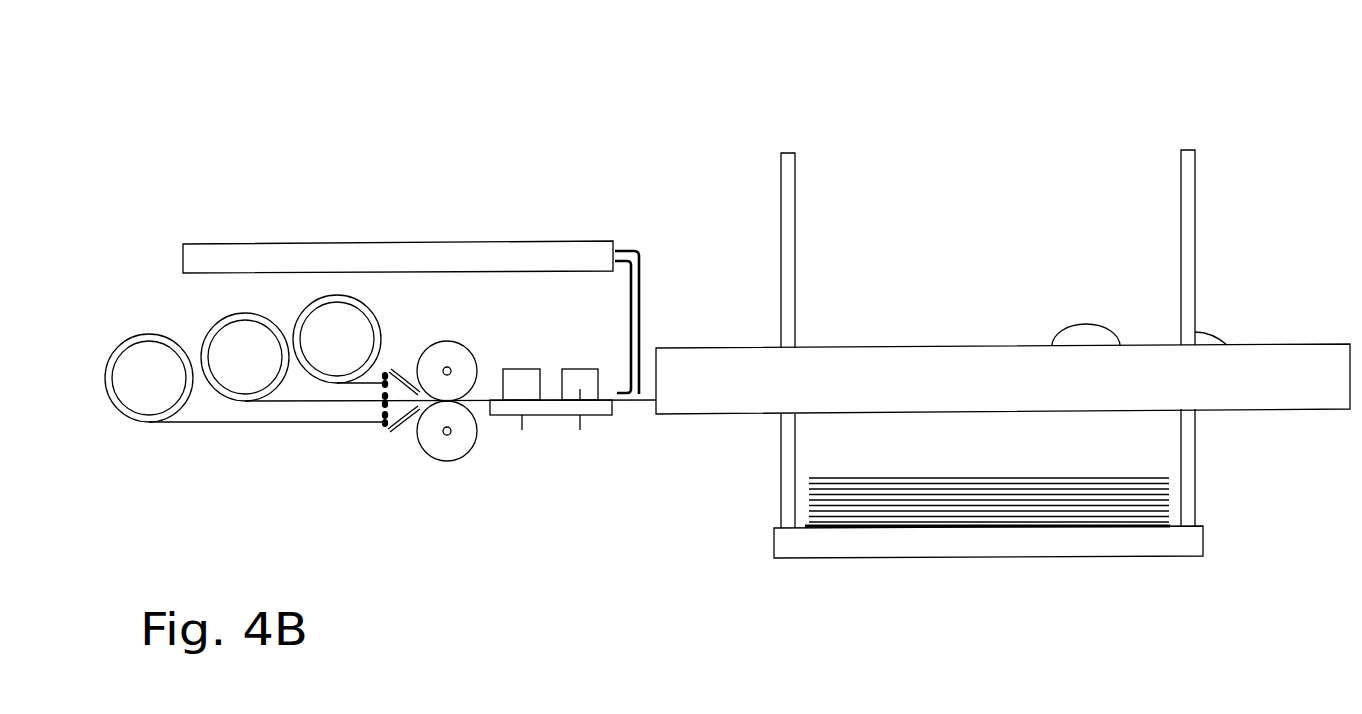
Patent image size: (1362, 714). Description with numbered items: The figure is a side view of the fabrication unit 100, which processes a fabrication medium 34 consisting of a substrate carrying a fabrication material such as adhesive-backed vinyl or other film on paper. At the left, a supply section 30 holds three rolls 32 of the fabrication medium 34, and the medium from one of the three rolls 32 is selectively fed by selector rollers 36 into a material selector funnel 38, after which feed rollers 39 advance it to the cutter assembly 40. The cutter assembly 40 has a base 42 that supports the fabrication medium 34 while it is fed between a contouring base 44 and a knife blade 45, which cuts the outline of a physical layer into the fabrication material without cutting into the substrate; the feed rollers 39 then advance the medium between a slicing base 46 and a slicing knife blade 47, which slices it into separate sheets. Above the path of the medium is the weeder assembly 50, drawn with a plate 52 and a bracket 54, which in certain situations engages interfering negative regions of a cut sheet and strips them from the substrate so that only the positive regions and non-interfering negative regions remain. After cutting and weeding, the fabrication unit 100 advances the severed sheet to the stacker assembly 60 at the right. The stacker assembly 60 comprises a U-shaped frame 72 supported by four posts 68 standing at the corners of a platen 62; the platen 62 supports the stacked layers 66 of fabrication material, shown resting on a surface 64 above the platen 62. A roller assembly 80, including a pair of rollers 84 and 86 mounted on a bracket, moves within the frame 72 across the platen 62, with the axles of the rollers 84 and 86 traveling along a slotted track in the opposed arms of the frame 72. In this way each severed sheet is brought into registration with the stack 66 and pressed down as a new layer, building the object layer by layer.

The fabrication unit 100 is at (165, 142).
The web supply assembly 30 is at (165, 495).
The rolls 32 is at (125, 338).
The fabrication medium 34 is at (262, 423).
The selector rollers 36 is at (380, 430).
The material selector funnel 38 is at (398, 428).
The feed rollers 39 is at (455, 463).
The cutter assembly 40 is at (574, 527).
The base 42 is at (603, 418).
The contouring base 44 is at (533, 363).
The knife blade 45 is at (524, 432).
The slicing base 46 is at (597, 363).
The slicing knife blade 47 is at (586, 432).
The weeder assembly 50 is at (372, 157).
The pressure plate 52 is at (238, 236).
The bracket 54 is at (640, 250).
The stacker assembly 60 is at (960, 172).
The platen 62 is at (1208, 541).
The platform 64 is at (1173, 522).
The stacked layers 66 is at (1073, 471).
The posts 68 is at (798, 162).
The U-shaped frame 72 is at (885, 340).
The roller assembly 80 is at (1137, 240).
The roller 84 is at (1085, 320).
The roller 86 is at (1202, 330).